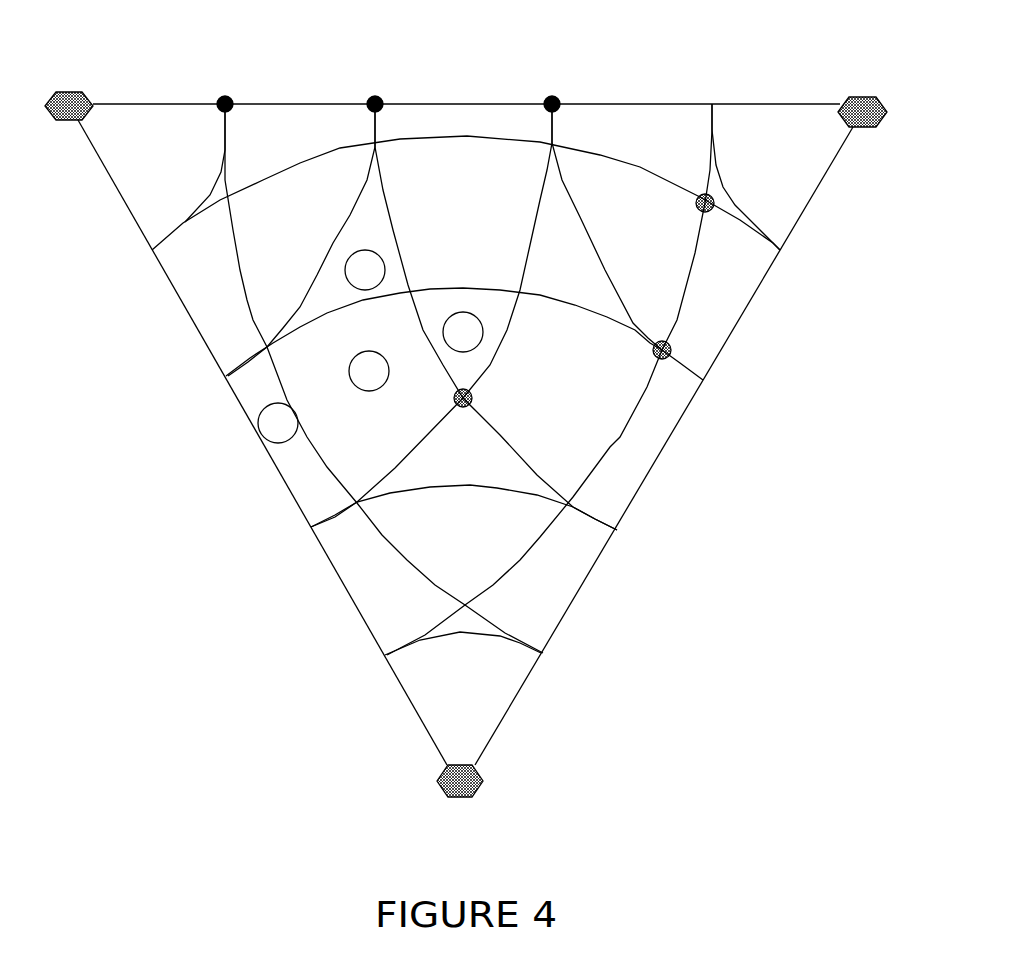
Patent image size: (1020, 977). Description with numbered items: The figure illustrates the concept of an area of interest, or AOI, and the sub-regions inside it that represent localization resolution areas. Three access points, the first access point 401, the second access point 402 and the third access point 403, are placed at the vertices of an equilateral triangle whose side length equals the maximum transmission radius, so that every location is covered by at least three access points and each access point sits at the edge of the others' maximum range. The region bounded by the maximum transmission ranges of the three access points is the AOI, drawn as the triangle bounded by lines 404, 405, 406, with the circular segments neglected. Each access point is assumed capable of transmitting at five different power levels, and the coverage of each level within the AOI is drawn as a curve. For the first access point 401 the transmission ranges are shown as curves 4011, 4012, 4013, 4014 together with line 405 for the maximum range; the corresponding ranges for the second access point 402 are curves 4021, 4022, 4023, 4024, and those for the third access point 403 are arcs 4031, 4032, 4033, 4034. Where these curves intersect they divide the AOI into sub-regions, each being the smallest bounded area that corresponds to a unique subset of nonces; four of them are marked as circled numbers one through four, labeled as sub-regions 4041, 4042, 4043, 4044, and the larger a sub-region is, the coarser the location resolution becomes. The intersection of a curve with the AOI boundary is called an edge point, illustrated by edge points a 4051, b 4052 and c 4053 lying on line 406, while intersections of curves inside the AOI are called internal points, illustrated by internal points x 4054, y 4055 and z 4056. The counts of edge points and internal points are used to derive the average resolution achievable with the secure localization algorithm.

The access point AP1 401 is at (101, 97).
The access point AP2 402 is at (836, 98).
The access point AP3 403 is at (435, 796).
The boundary line of the area of interest 404 is at (356, 622).
The boundary line of the area of interest 405 is at (704, 403).
The boundary line of the area of interest 406 is at (512, 102).
The transmission range of AP1 4011 is at (202, 194).
The transmission range of AP1 4012 is at (339, 245).
The transmission range of AP1 4013 is at (424, 438).
The transmission range of AP1 4014 is at (589, 473).
The transmission range of AP2 4021 is at (760, 172).
The transmission range of AP2 4022 is at (579, 204).
The transmission range of AP2 4023 is at (384, 167).
The transmission range of AP2 4024 is at (275, 270).
The transmission range of AP3 4031 is at (431, 643).
The transmission range of AP3 4032 is at (411, 501).
The transmission range of AP3 4033 is at (533, 308).
The transmission range of AP3 4034 is at (426, 148).
The sub-region 1 4041 is at (500, 303).
The sub-region 2 4042 is at (346, 398).
The sub-region 3 4043 is at (256, 409).
The sub-region 4 4044 is at (420, 250).
The edge point a 4051 is at (280, 72).
The edge point b 4052 is at (430, 70).
The edge point c 4053 is at (563, 98).
The internal point x 4054 is at (480, 403).
The internal point y 4055 is at (641, 348).
The internal point z 4056 is at (686, 212).